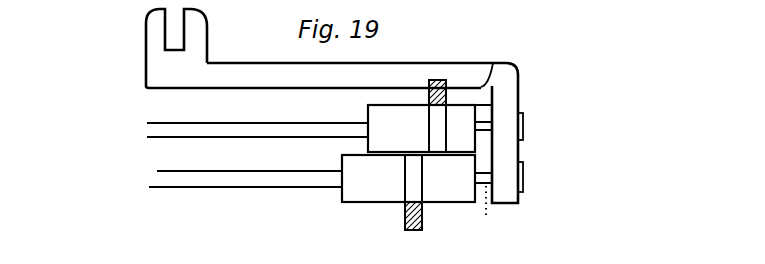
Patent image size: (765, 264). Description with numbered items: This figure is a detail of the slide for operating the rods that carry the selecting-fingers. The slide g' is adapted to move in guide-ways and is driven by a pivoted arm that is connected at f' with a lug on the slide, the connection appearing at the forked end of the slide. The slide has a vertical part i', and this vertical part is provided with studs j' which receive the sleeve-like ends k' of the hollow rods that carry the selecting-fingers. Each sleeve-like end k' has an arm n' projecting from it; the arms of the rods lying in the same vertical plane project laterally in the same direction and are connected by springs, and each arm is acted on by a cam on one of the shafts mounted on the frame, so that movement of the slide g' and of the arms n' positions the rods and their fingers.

The connection point f' is at (176, 47).
The slide g' is at (334, 133).
The vertical part of the slide i' is at (326, 145).
The sleeve-like ends k' is at (417, 153).
The arm n' is at (425, 155).
The studs j' is at (479, 207).